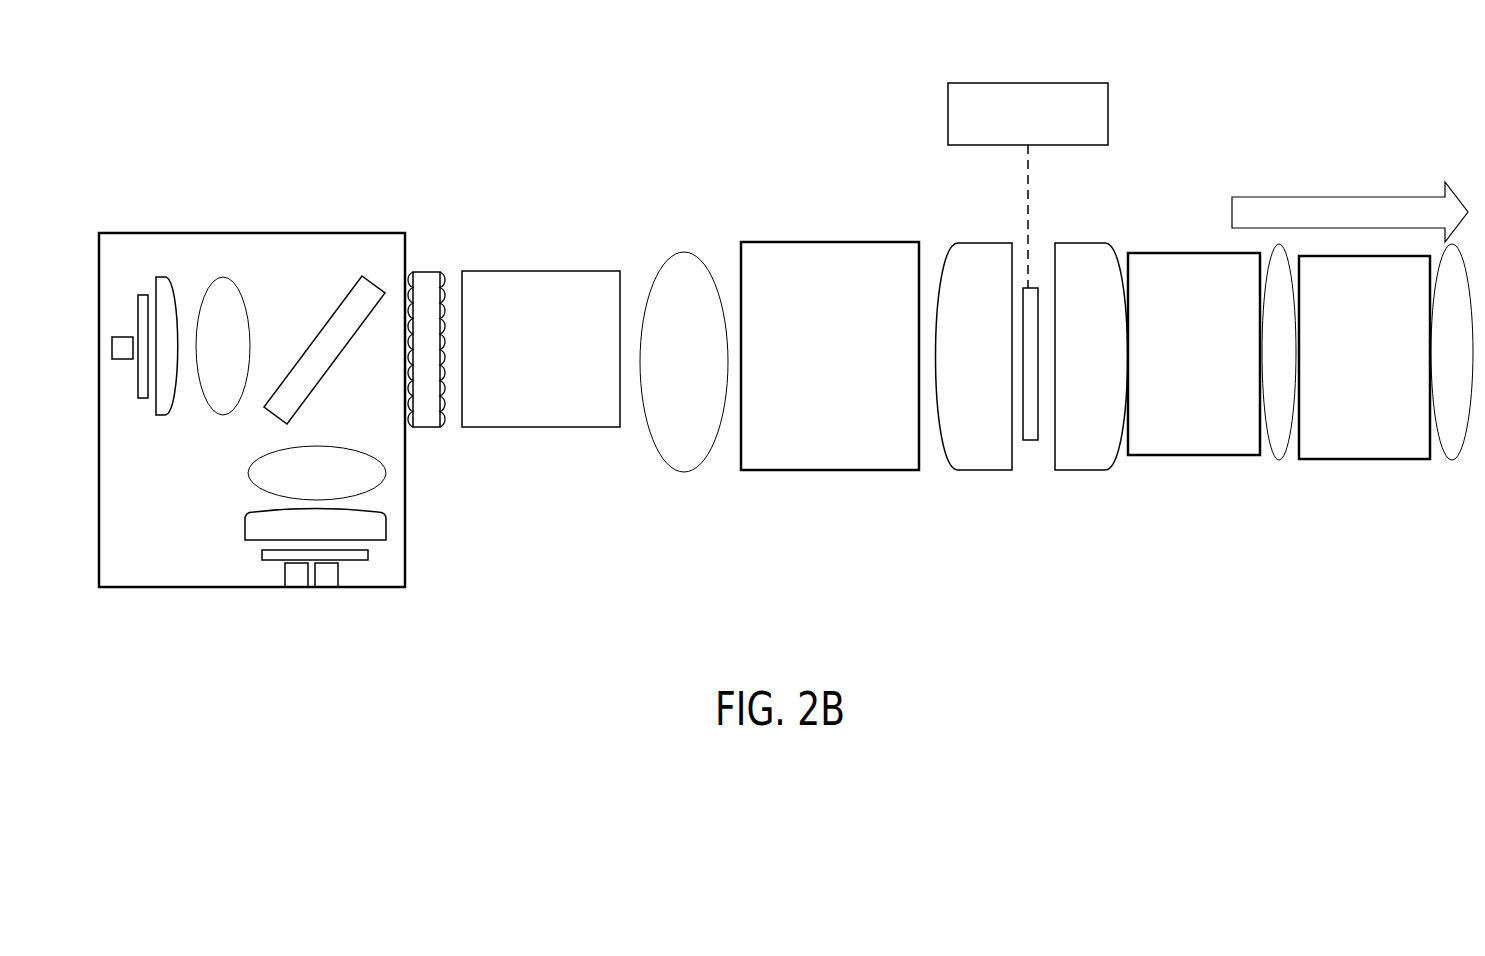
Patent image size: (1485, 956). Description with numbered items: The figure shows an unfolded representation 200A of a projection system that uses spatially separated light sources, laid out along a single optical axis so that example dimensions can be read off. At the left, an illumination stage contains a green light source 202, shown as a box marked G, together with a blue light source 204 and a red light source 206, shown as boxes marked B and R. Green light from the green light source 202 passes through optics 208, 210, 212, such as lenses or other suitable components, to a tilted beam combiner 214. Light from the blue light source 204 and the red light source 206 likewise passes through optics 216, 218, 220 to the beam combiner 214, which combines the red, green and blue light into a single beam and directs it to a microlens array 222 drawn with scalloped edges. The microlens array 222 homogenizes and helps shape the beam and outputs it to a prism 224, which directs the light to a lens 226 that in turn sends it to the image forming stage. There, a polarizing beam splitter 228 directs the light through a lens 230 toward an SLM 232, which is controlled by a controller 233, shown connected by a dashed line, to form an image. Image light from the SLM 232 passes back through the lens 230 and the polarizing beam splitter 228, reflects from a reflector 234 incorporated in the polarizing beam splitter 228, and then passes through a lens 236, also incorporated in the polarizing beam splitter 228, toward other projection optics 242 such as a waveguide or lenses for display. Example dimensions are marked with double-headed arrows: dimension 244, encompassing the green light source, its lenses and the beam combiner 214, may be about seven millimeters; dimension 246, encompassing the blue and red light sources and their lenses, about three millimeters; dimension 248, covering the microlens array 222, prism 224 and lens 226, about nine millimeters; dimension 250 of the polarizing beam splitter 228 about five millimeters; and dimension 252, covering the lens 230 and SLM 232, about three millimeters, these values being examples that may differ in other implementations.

The unfolded representation 200A is at (1354, 44).
The green light source 202 is at (122, 335).
The blue light source 204 is at (293, 588).
The red light source 206 is at (323, 588).
The optics 208 is at (143, 399).
The optics 210 is at (165, 416).
The optics 212 is at (223, 346).
The beam combiner 214 is at (333, 355).
The optics 216 is at (369, 554).
The optics 218 is at (387, 524).
The optics 220 is at (317, 473).
The microlens array 222 is at (427, 428).
The prism 224 is at (541, 349).
The lens 226 is at (684, 362).
The polarizing beam splitter 228 is at (1085, 356).
The lens 230 is at (1032, 356).
The SLM 232 is at (1033, 441).
The controller 233 is at (1028, 185).
The reflector 234 is at (1282, 462).
The lens 236 is at (1455, 462).
The projection optics 242 is at (1350, 212).
The dimension 244 is at (118, 193).
The dimension 246 is at (230, 461).
The dimension 248 is at (714, 193).
The dimension 250 is at (744, 193).
The dimension 252 is at (934, 193).